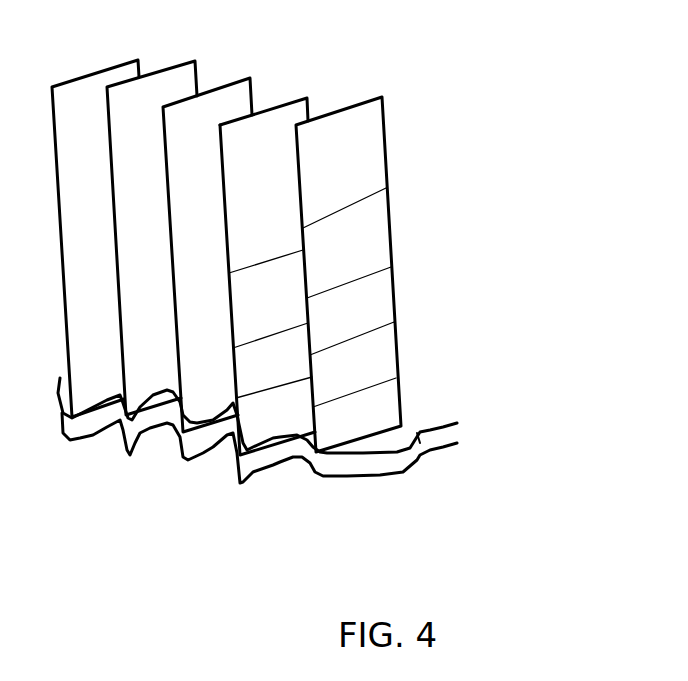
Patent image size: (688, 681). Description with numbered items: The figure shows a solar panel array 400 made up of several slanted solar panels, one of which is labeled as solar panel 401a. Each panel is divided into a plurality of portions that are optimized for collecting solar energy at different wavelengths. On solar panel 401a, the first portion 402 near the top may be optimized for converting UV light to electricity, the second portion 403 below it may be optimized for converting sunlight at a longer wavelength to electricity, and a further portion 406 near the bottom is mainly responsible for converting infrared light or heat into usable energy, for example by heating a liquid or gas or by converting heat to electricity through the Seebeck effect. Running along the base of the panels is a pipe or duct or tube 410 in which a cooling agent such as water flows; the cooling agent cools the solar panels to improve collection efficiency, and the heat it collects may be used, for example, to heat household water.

The solar panel array 400 is at (307, 238).
The solar panel 401a is at (288, 238).
The first portion 402 is at (357, 22).
The second portion 403 is at (304, 267).
The portion 406 is at (302, 342).
The pipe or duct or tube 410 is at (465, 431).